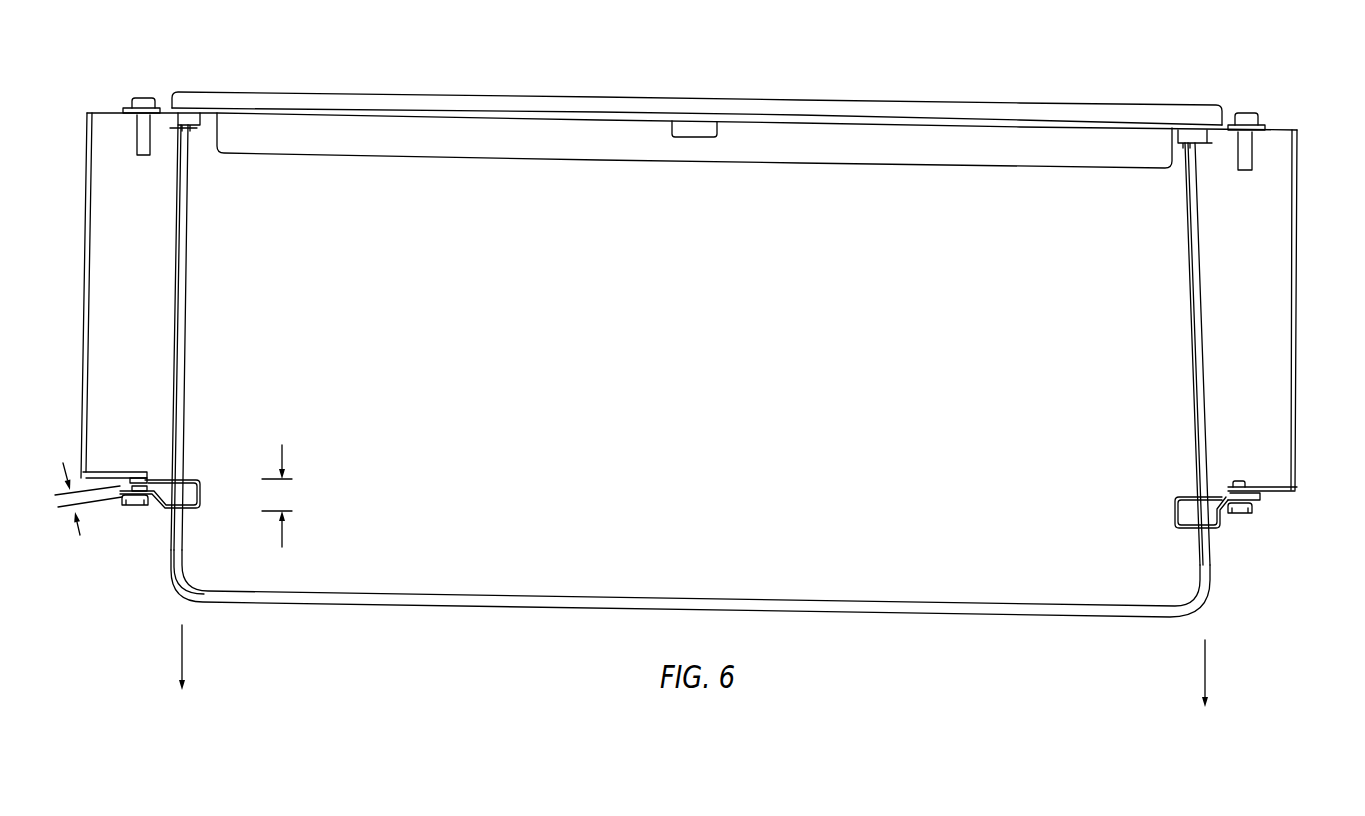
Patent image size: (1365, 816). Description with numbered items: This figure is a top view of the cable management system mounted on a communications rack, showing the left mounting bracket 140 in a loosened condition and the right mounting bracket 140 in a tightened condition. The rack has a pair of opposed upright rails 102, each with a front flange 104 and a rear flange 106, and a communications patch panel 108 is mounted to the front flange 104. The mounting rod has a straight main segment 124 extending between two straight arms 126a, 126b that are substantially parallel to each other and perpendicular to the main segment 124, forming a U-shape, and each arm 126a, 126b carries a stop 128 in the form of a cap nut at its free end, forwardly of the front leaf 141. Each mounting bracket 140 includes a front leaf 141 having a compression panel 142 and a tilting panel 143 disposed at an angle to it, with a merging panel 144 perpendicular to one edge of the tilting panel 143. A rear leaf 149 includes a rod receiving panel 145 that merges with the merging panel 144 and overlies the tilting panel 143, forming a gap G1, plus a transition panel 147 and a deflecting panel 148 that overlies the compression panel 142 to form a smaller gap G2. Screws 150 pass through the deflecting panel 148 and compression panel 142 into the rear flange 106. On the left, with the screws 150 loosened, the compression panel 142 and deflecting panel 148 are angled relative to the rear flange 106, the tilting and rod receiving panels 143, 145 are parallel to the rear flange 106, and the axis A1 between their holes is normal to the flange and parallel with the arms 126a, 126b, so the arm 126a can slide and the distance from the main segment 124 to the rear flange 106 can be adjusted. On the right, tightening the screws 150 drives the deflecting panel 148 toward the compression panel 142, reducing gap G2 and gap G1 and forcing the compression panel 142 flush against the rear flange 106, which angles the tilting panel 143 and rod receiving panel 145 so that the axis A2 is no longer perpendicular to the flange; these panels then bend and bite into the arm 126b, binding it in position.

The upright rail 102 is at (83, 337).
The front flange 104 is at (88, 113).
The rear flange 106 is at (100, 472).
The communications patch panel 108 is at (845, 100).
The main segment 124 is at (487, 608).
The arm 126a is at (186, 312).
The arm 126b is at (1188, 333).
The stop 128 is at (178, 116).
The mounting bracket 140 is at (145, 354).
The front leaf 141 is at (143, 455).
The compression panel 142 is at (117, 487).
The tilting panel 143 is at (193, 479).
The merging panel 144 is at (200, 500).
The rod receiving panel 145 is at (192, 511).
The transition panel 147 is at (158, 509).
The deflecting panel 148 is at (117, 502).
The rear leaf 149 is at (165, 532).
The screw 150 is at (133, 506).
The gap G1 is at (290, 496).
The gap G2 is at (53, 499).
The axis A1 is at (183, 675).
The axis A2 is at (1206, 691).